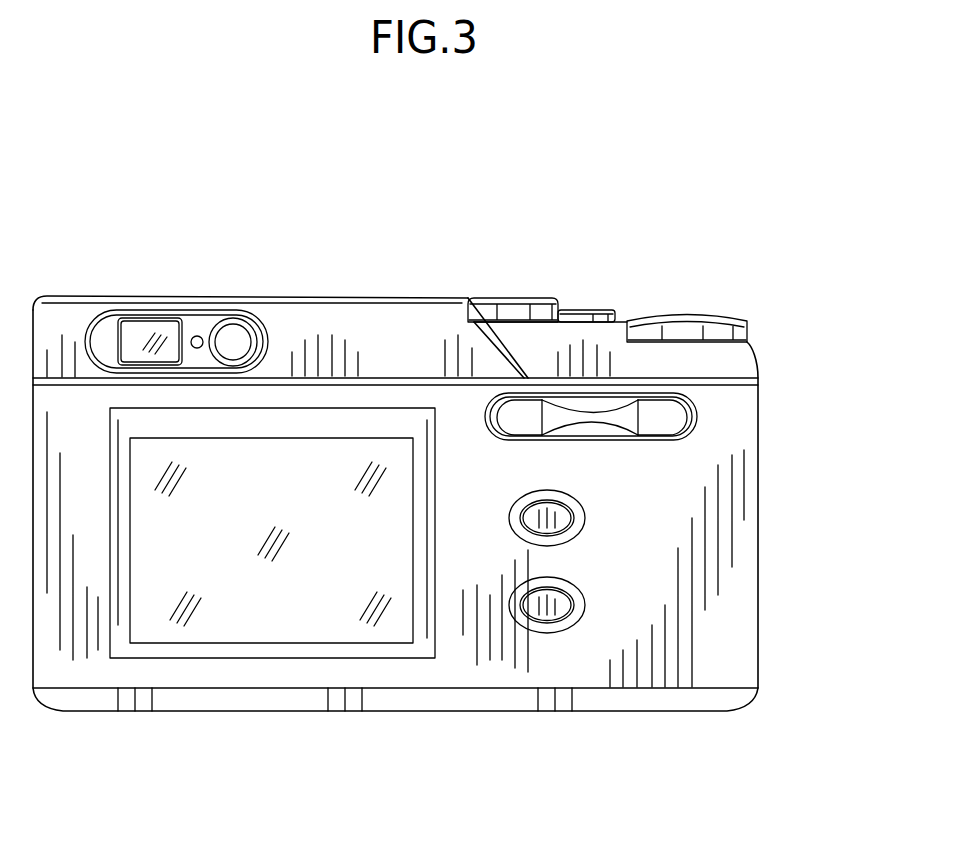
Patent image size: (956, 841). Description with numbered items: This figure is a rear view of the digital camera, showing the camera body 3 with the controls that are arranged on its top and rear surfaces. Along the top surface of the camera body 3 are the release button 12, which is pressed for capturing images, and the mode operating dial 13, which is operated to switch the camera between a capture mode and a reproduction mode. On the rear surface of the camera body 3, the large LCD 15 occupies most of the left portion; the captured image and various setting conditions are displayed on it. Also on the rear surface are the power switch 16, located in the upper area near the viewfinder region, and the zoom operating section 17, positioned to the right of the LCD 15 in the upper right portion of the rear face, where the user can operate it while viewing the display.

The camera body 3 is at (593, 712).
The release button 12 is at (683, 313).
The mode operating dial 13 is at (513, 298).
The LCD 15 is at (307, 602).
The power switch 16 is at (233, 340).
The zoom operating section 17 is at (655, 412).